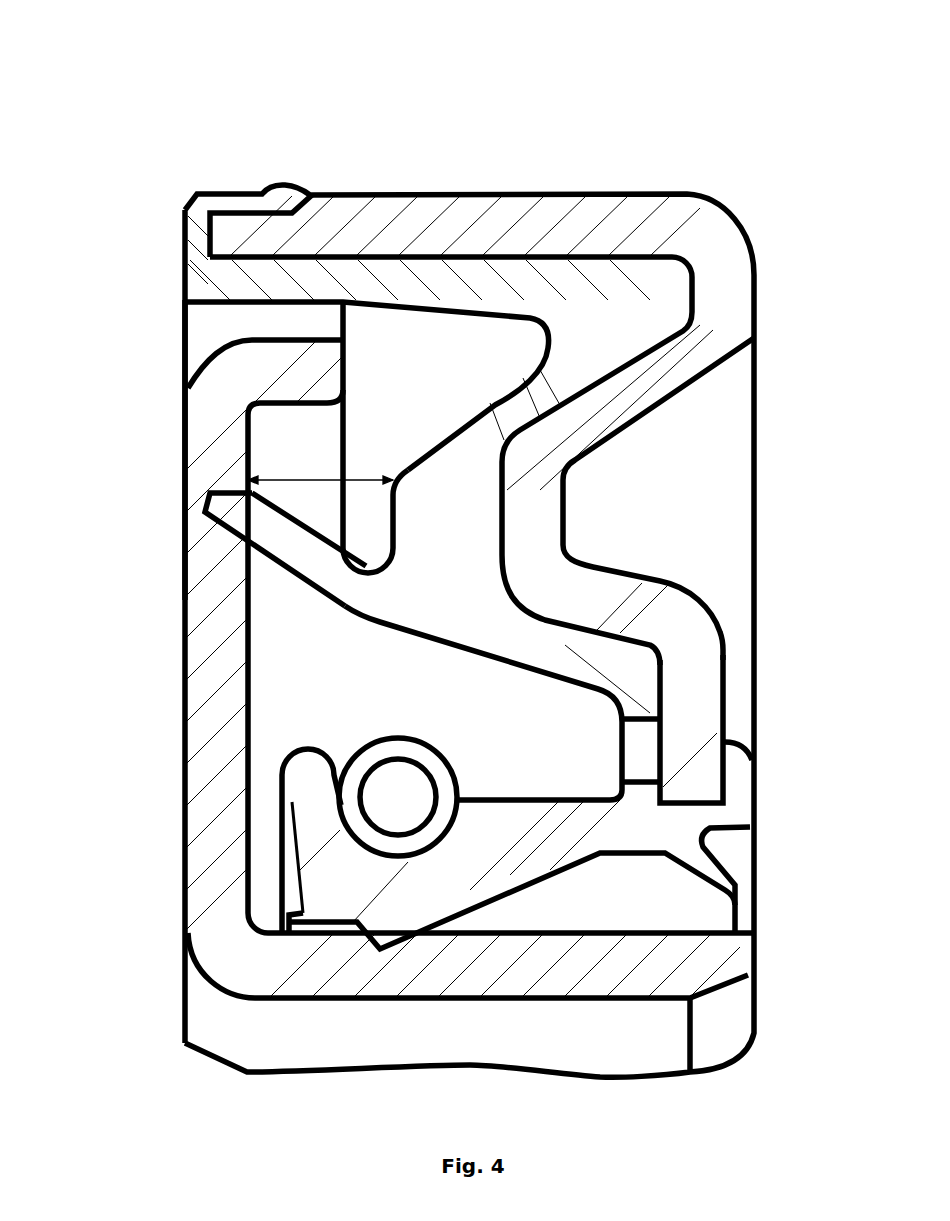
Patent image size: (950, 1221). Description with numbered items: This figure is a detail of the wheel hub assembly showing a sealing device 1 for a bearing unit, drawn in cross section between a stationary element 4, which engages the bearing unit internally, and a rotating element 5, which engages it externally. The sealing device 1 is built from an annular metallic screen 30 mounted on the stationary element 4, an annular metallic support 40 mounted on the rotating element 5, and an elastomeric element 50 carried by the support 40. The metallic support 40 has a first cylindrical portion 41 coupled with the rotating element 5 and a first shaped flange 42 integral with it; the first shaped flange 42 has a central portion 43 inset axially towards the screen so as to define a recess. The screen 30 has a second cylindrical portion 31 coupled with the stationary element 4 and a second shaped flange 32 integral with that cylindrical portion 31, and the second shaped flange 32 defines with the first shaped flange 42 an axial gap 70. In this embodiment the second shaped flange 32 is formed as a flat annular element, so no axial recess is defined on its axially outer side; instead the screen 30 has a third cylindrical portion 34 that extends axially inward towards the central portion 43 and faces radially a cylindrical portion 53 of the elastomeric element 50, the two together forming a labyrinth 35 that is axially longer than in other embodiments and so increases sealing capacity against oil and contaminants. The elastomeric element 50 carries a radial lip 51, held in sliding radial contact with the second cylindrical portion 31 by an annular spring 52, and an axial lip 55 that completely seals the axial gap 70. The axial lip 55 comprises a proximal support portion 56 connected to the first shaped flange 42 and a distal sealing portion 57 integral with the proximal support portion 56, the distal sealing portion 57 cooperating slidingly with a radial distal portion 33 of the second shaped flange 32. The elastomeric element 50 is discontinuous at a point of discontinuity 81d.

The sealing device 1 is at (628, 148).
The stationary element 4 is at (589, 1050).
The rotating element 5 is at (364, 166).
The annular metallic screen 30 is at (240, 738).
The second cylindrical portion 31 is at (317, 970).
The second shaped flange 32 is at (234, 612).
The radial distal portion 33 is at (207, 442).
The third cylindrical portion 34 is at (290, 385).
The labyrinth 35 is at (257, 317).
The annular metallic support 40 is at (690, 347).
The first cylindrical portion 41 is at (470, 225).
The first shaped flange 42 is at (668, 727).
The central portion 43 is at (557, 465).
The elastomeric element 50 is at (580, 645).
The radial lip 51 is at (487, 878).
The annular spring 52 is at (413, 790).
The cylindrical portion 53 is at (256, 290).
The axial lip 55 is at (463, 663).
The proximal support portion 56 is at (482, 552).
The distal sealing portion 57 is at (305, 543).
The axial gap 70 is at (292, 458).
The point of discontinuity 81d is at (640, 760).